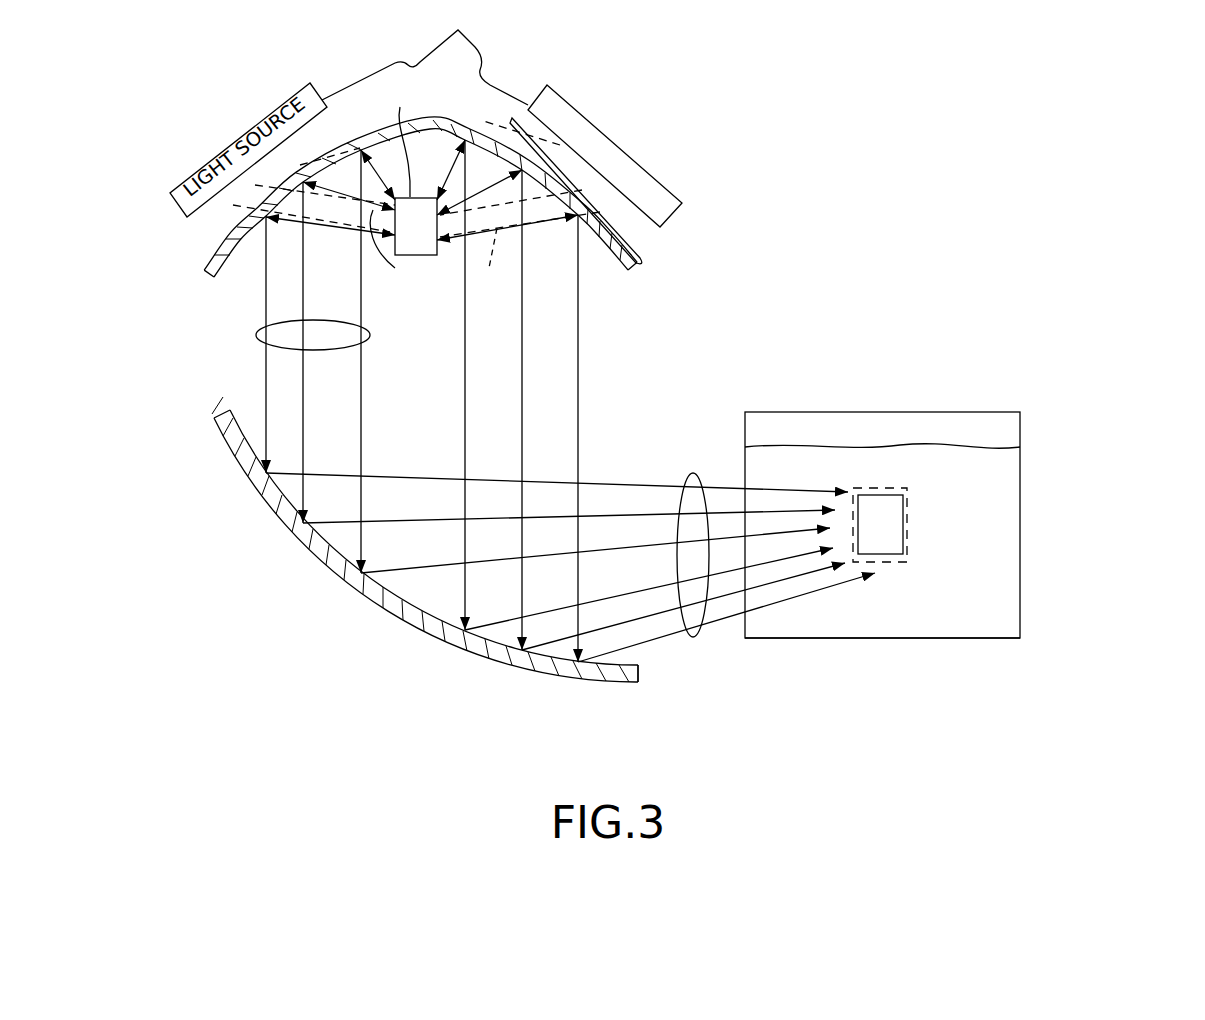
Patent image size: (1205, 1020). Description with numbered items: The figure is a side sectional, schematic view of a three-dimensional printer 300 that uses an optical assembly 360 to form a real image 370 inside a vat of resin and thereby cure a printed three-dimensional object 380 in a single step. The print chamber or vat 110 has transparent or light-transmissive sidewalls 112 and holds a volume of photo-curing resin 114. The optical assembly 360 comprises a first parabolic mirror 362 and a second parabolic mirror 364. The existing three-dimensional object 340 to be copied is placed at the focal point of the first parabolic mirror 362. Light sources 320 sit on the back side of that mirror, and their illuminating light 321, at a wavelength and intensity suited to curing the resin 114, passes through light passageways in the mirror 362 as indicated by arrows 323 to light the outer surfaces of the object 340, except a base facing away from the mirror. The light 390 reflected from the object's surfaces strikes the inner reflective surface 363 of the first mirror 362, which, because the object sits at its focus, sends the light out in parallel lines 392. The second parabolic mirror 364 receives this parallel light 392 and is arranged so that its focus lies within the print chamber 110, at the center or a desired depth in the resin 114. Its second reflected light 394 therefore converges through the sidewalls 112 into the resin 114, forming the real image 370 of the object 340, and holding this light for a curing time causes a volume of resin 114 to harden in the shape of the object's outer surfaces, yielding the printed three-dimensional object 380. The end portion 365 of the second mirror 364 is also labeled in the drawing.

The 3D printer 300 is at (885, 205).
The light sources 320 is at (425, 53).
The illuminating light 321 is at (640, 215).
The arrows 323 is at (490, 267).
The 3D object 340 is at (430, 256).
The optical assembly 360 is at (270, 655).
The first parabolic mirror 362 is at (637, 280).
The inner reflective surface 363 is at (614, 262).
The second parabolic mirror 364 is at (610, 690).
The mirror end 365 is at (640, 677).
The real image 370 is at (907, 505).
The printed 3D object 380 is at (903, 540).
The reflected light 390 is at (320, 233).
The parallel light 392 is at (256, 335).
The second reflected light 394 is at (692, 473).
The print chamber 110 is at (980, 410).
The sidewalls 112 is at (995, 625).
The photo-curing resin 114 is at (1000, 447).